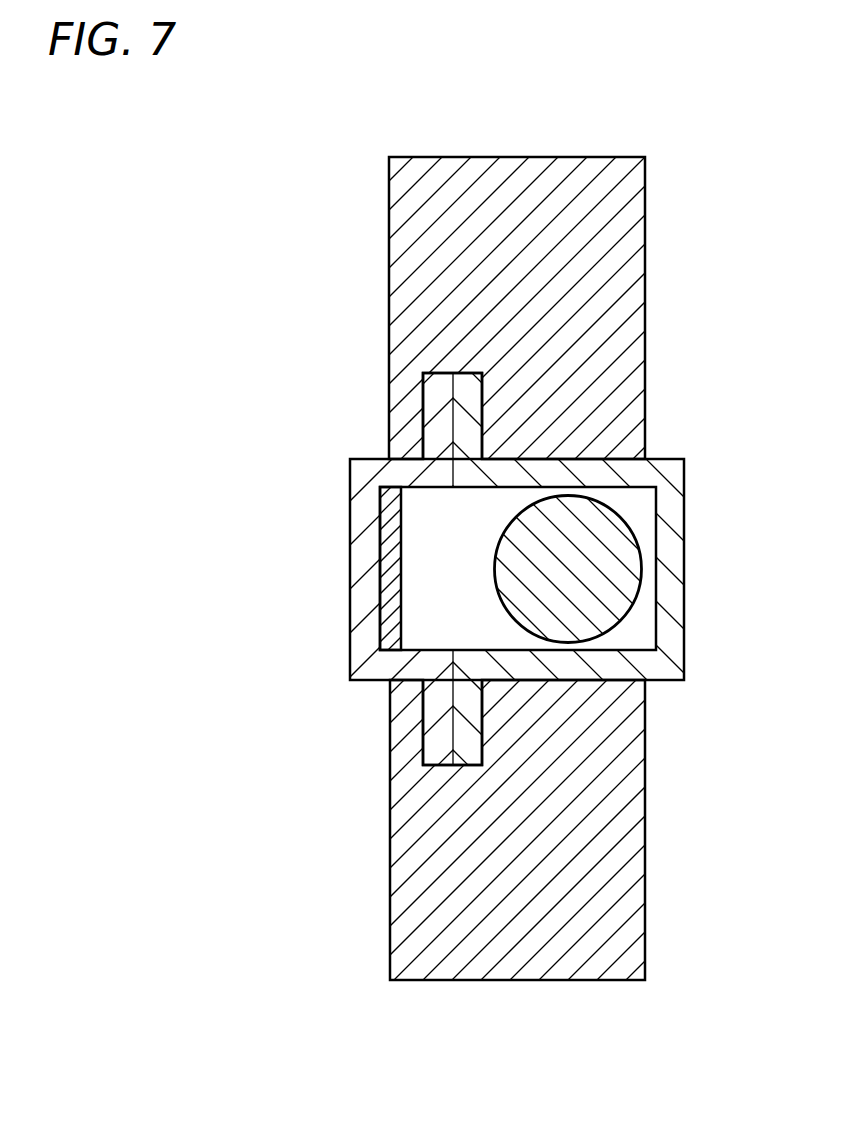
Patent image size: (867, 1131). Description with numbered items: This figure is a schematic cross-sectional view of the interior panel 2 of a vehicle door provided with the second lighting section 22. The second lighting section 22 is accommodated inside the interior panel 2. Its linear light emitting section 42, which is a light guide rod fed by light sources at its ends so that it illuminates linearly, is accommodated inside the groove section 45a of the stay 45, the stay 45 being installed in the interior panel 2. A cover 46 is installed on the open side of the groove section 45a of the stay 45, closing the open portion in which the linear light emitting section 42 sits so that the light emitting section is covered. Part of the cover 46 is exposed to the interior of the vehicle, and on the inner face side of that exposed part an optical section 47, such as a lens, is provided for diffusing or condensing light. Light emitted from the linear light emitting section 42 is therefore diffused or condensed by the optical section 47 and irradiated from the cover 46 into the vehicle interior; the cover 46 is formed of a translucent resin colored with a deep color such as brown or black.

The interior panel 2 is at (389, 248).
The second lighting section 22 is at (457, 618).
The linear light emitting section 42 is at (618, 515).
The stay 45 is at (590, 456).
The groove section 45a is at (513, 490).
The cover 46 is at (372, 458).
The optical section 47 is at (400, 543).